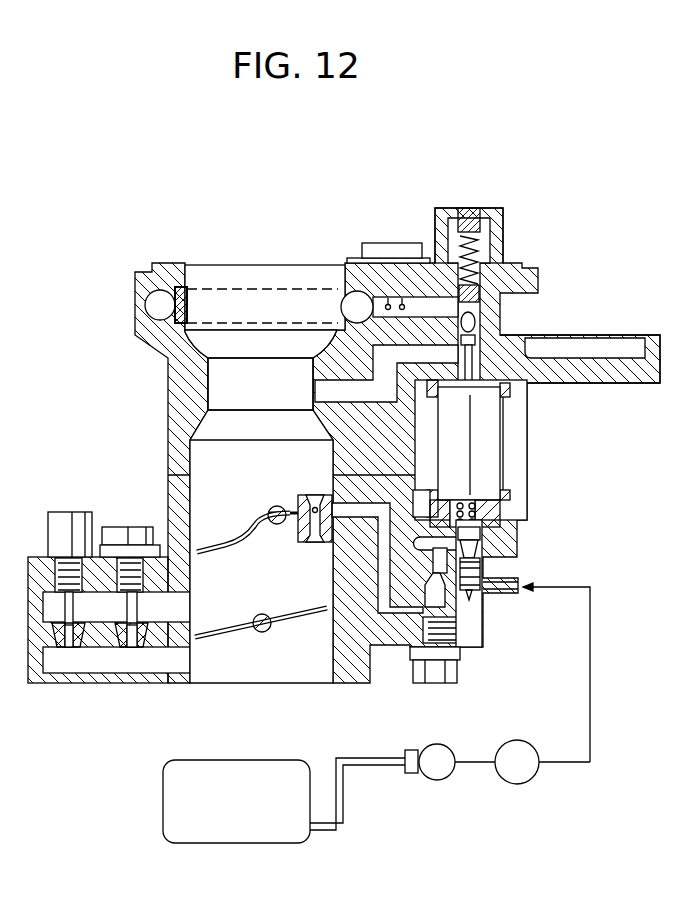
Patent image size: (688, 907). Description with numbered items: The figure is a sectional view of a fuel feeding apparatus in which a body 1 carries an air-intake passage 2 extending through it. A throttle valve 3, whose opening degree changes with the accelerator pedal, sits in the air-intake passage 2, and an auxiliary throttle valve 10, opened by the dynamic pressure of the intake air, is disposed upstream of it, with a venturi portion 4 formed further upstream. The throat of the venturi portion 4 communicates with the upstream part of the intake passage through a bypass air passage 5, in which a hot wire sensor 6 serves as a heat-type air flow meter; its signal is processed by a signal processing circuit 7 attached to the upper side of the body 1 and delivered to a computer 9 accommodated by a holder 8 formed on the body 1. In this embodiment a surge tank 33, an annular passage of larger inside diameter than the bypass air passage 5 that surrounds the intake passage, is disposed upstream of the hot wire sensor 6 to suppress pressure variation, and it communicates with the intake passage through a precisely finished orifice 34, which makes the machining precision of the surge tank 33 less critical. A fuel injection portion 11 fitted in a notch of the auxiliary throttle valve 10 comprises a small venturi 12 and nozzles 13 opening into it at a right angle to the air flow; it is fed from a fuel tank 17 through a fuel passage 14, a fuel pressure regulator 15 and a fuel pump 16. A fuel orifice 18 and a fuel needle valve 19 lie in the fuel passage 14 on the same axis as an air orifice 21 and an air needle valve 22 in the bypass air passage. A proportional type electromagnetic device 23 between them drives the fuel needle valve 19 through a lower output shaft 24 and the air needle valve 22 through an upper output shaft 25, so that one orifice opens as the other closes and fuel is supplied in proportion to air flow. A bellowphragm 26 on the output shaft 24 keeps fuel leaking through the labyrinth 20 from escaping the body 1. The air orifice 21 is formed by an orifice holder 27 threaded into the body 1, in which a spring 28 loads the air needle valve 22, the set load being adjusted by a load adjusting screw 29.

The body 1 is at (170, 268).
The air-intake passage 2 is at (262, 272).
The throttle valve 3 is at (245, 633).
The venturi portion 4 is at (208, 393).
The bypass air passage 5 is at (315, 392).
The hot wire sensor 6 is at (345, 300).
The signal processing circuit 7 is at (388, 248).
The holder 8 is at (628, 383).
The computer 9 is at (606, 335).
The auxiliary throttle valve 10 is at (228, 548).
The fuel injection portion 11 is at (300, 496).
The small venturi 12 is at (312, 530).
The nozzles 13 is at (315, 507).
The fuel passage 14 is at (395, 615).
The fuel pressure regulator 15 is at (535, 748).
The fuel pump 16 is at (448, 748).
The fuel tank 17 is at (237, 760).
The fuel orifice 18 is at (478, 600).
The fuel needle valve 19 is at (492, 592).
The labyrinth 20 is at (487, 568).
The air orifice 21 is at (483, 322).
The air needle valve 22 is at (482, 335).
The proportional type electromagnetic device 23 is at (498, 452).
The output shaft 24 is at (472, 500).
The output shaft 25 is at (456, 350).
The bellowphragm 26 is at (483, 515).
The orifice holder 27 is at (488, 213).
The spring 28 is at (485, 260).
The load adjusting screw 29 is at (465, 218).
The surge tank 33 is at (150, 307).
The orifice 34 is at (195, 312).